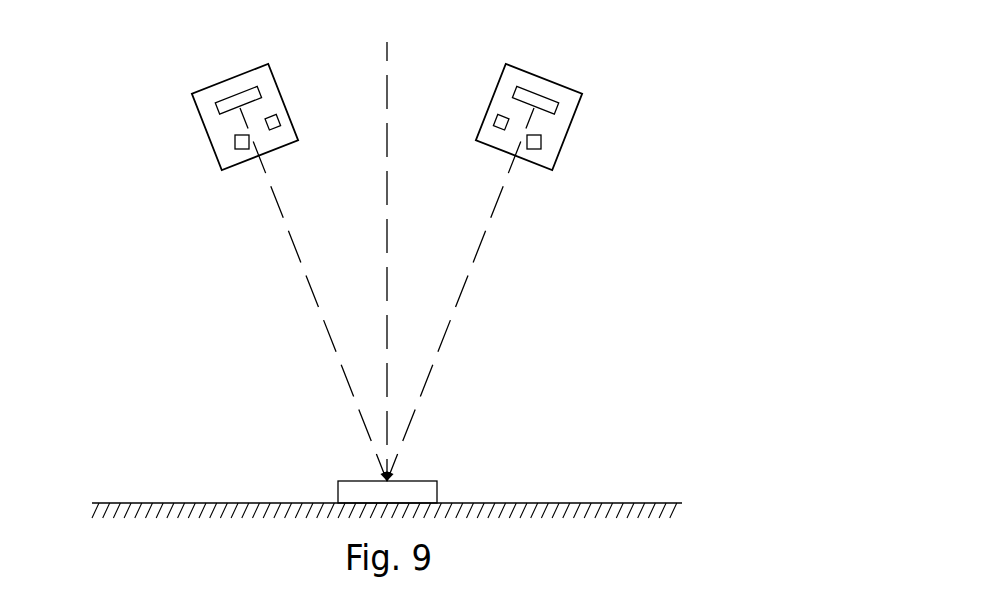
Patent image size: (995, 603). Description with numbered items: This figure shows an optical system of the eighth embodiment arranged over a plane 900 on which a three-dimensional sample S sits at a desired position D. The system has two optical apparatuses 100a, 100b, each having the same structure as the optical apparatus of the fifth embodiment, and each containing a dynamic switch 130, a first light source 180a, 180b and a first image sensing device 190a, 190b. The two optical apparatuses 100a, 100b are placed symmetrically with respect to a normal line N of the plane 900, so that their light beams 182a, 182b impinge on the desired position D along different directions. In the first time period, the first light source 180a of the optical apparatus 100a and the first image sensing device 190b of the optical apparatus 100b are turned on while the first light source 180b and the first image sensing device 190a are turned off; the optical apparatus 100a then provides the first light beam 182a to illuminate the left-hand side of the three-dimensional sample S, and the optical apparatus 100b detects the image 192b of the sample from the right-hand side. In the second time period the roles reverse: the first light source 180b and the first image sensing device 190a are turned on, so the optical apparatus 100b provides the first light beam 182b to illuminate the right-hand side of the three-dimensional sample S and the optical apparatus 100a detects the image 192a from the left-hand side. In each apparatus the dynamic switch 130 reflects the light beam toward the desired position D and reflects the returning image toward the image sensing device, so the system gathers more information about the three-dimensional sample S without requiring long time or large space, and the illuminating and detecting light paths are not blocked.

The optical apparatus 100a is at (117, 83).
The optical apparatus 100b is at (645, 83).
The dynamic switch 130 is at (233, 101).
The first light source 180a is at (268, 122).
The first light source 180b is at (506, 122).
The first image sensing device 190a is at (235, 144).
The first image sensing device 190b is at (540, 144).
The first light beam 182a is at (245, 295).
The first image 192a is at (314, 290).
The first light beam 182b is at (532, 295).
The first image 192b is at (461, 292).
The normal line N is at (389, 374).
The desired position D is at (391, 477).
The three-dimensional sample S is at (407, 492).
The plane 900 is at (657, 503).